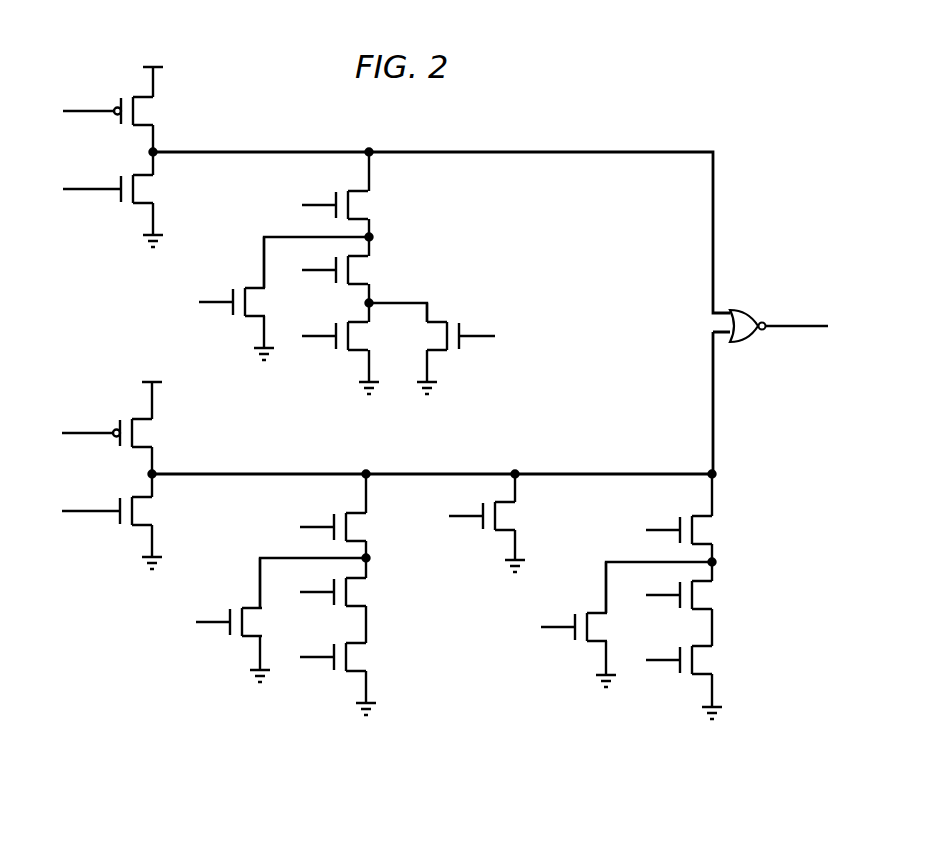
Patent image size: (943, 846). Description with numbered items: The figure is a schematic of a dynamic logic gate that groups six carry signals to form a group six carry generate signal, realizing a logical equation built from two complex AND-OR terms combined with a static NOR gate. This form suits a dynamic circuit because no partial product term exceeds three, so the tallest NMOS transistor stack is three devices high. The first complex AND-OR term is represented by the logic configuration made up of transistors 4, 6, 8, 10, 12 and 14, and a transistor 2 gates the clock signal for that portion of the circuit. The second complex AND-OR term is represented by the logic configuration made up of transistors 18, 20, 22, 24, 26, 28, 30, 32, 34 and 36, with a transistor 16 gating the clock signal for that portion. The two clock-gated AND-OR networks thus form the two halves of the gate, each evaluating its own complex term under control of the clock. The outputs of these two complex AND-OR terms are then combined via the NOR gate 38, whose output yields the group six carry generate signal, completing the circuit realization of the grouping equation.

The transistor 2 is at (124, 109).
The transistor 4 is at (124, 199).
The transistor 6 is at (254, 287).
The transistor 8 is at (350, 194).
The transistor 10 is at (356, 270).
The transistor 12 is at (356, 348).
The transistor 14 is at (440, 323).
The transistor 16 is at (129, 428).
The transistor 18 is at (129, 521).
The transistor 20 is at (250, 607).
The transistor 22 is at (354, 516).
The transistor 24 is at (354, 600).
The transistor 26 is at (354, 673).
The transistor 28 is at (507, 523).
The transistor 30 is at (600, 612).
The transistor 32 is at (700, 518).
The transistor 34 is at (700, 604).
The transistor 36 is at (700, 676).
The NOR gate 38 is at (748, 310).